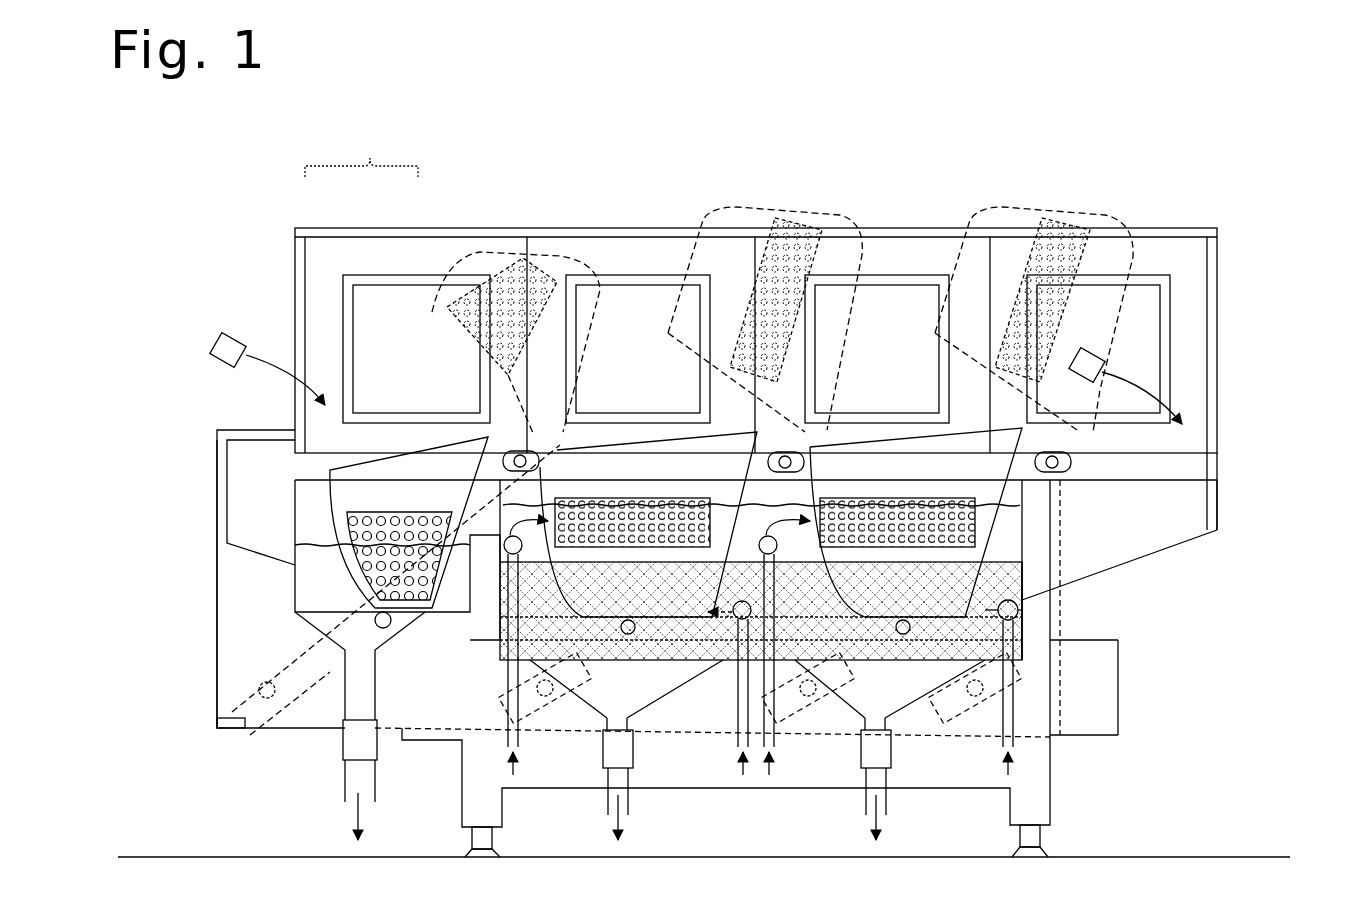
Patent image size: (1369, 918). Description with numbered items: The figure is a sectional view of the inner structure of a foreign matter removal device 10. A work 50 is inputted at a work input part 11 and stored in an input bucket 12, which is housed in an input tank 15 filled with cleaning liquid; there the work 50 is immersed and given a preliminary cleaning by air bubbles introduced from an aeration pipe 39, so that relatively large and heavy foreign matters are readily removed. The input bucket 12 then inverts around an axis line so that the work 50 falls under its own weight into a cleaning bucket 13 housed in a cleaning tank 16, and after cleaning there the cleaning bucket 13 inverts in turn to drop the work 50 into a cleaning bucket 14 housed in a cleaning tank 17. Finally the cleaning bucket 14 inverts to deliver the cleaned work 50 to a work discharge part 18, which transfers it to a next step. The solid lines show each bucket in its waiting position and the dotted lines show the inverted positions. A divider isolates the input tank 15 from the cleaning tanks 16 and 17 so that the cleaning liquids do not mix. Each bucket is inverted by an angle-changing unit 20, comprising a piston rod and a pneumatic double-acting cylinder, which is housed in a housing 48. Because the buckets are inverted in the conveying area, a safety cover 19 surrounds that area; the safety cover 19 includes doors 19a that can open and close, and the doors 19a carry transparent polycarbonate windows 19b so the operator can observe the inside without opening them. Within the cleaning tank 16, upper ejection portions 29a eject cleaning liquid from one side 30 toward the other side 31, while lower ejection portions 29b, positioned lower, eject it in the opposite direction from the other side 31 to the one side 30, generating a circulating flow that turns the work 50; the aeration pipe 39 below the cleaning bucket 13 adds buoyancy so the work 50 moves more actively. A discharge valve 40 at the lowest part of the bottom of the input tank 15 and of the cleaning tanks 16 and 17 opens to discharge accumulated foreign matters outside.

The foreign matter removal device 10 is at (1266, 178).
The work input part 11 is at (238, 430).
The input bucket 12 is at (352, 548).
The cleaning bucket 13 is at (613, 617).
The cleaning bucket 14 is at (865, 617).
The input tank 15 is at (300, 578).
The cleaning tank 16 is at (525, 592).
The cleaning tank 17 is at (1000, 658).
The work discharge part 18 is at (1212, 506).
The safety cover 19 is at (361, 149).
The door 19a is at (352, 257).
The window 19b is at (413, 295).
The angle-changing unit 20 is at (272, 725).
The upper ejection portion 29a is at (760, 678).
The lower ejection portion 29b is at (1025, 632).
The one side 30 is at (745, 640).
The other side 31 is at (1025, 582).
The aeration pipe 39 is at (390, 630).
The discharge valve 40 is at (344, 768).
The housing 48 is at (217, 620).
The work 50 is at (232, 336).